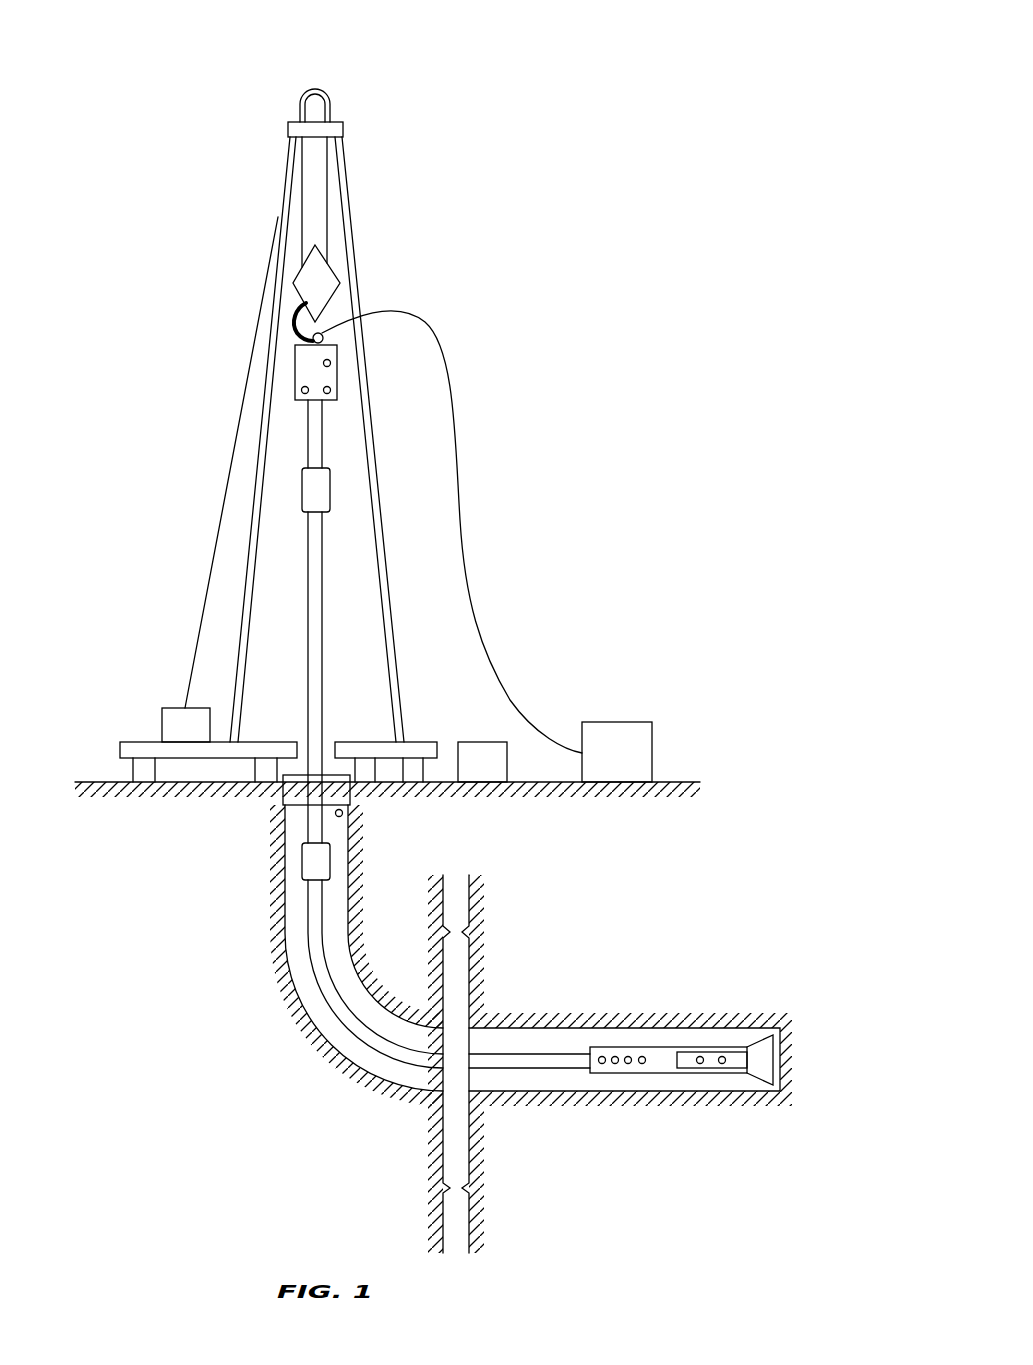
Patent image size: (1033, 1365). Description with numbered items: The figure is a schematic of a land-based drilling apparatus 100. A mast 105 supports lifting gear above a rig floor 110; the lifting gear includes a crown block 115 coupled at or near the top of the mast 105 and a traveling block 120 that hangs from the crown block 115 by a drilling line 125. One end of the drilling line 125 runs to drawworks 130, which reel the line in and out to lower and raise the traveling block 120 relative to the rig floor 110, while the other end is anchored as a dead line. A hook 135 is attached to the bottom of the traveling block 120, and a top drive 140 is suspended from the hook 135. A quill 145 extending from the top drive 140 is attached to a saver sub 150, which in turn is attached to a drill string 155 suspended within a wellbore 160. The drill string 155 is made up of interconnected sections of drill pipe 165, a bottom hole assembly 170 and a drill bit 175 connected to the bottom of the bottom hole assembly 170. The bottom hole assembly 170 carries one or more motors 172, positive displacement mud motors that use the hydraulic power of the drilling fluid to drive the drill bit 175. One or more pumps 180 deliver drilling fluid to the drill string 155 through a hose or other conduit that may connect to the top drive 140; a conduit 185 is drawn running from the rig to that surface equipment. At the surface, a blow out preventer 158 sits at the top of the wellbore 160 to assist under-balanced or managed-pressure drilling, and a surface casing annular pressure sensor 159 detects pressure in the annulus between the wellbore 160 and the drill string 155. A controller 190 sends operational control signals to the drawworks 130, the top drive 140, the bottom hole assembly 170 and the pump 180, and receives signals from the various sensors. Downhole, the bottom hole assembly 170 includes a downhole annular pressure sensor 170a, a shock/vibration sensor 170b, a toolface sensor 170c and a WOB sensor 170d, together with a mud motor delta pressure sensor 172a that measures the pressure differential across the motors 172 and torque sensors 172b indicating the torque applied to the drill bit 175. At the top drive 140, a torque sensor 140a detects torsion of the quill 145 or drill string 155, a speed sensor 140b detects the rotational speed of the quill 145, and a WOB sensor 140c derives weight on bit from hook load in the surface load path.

The apparatus 100 is at (236, 68).
The mast 105 is at (350, 167).
The rig floor 110 is at (122, 750).
The crown block 115 is at (332, 96).
The traveling block 120 is at (342, 283).
The drilling line 125 is at (298, 170).
The drawworks 130 is at (162, 712).
The hook 135 is at (294, 318).
The top drive 140 is at (295, 352).
The torque sensor 140a is at (301, 390).
The speed sensor 140b is at (331, 363).
The WOB sensor 140c is at (331, 390).
The quill 145 is at (308, 433).
The saver sub 150 is at (302, 488).
The drill string 155 is at (290, 561).
The blow out preventer 158 is at (283, 797).
The surface casing annular pressure sensor 159 is at (343, 815).
The wellbore 160 is at (300, 922).
The drill pipe 165 is at (307, 678).
The bottom hole assembly 170 is at (738, 1087).
The downhole annular pressure sensor 170a is at (602, 1064).
The shock/vibration sensor 170b is at (615, 1056).
The toolface sensor 170c is at (628, 1064).
The WOB sensor 170d is at (642, 1056).
The motor 172 is at (715, 1073).
The mud motor delta pressure sensor 172a is at (700, 1056).
The torque sensor 172b is at (722, 1056).
The drill bit 175 is at (760, 1035).
The pump 180 is at (618, 722).
The communication cable 185 is at (488, 632).
The controller 190 is at (482, 742).